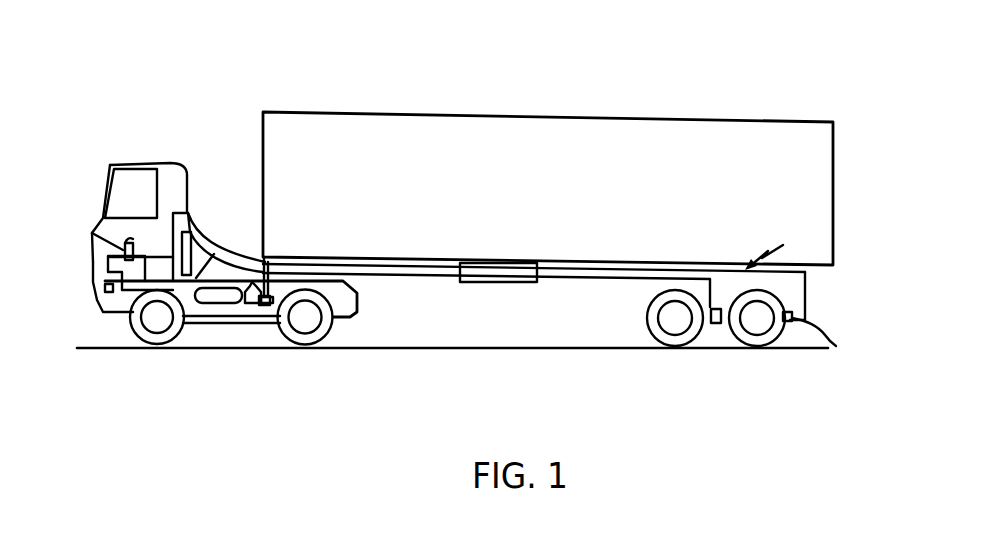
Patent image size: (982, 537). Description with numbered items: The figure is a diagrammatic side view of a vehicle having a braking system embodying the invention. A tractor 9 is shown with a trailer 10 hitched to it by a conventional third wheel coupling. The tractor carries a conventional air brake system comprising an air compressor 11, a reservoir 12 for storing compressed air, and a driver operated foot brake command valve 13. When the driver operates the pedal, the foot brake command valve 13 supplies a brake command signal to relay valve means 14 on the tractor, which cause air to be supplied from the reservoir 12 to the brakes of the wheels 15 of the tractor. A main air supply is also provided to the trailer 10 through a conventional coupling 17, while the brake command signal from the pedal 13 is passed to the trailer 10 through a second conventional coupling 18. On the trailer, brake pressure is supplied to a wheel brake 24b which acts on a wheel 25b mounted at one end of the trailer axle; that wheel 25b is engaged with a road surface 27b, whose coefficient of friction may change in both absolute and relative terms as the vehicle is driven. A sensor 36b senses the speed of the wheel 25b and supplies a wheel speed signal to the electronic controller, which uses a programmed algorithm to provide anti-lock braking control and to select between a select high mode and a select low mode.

The tractor 9 is at (141, 156).
The trailer 10 is at (572, 101).
The air compressor 11 is at (102, 312).
The reservoir 12 is at (225, 304).
The foot brake command valve 13 is at (91, 233).
The relay valve means 14 is at (262, 305).
The wheels 15 is at (153, 347).
The coupling 17 is at (192, 324).
The coupling 18 is at (205, 228).
The wheel brake 24b is at (708, 347).
The wheel 25b is at (780, 347).
The surface 27b is at (752, 347).
The sensor 36b is at (872, 373).